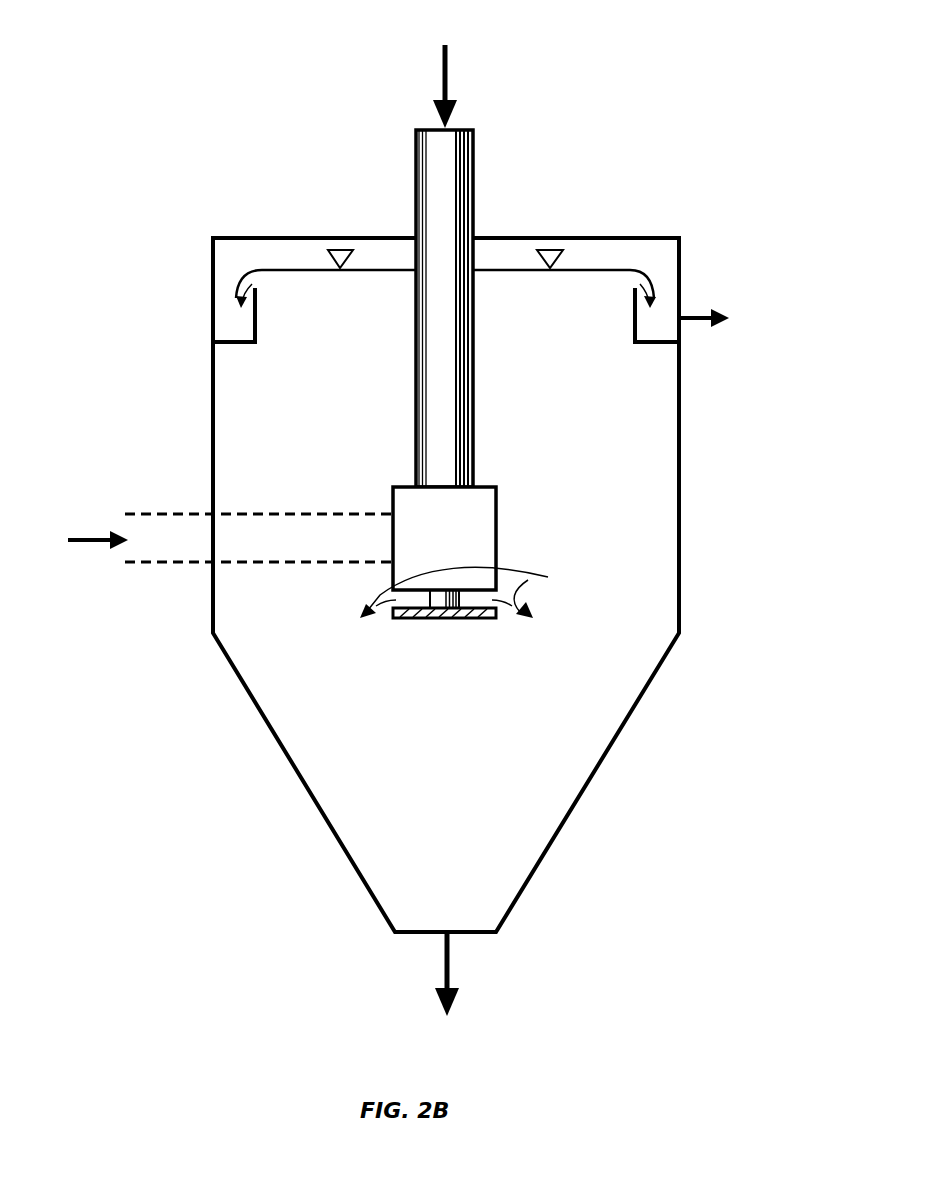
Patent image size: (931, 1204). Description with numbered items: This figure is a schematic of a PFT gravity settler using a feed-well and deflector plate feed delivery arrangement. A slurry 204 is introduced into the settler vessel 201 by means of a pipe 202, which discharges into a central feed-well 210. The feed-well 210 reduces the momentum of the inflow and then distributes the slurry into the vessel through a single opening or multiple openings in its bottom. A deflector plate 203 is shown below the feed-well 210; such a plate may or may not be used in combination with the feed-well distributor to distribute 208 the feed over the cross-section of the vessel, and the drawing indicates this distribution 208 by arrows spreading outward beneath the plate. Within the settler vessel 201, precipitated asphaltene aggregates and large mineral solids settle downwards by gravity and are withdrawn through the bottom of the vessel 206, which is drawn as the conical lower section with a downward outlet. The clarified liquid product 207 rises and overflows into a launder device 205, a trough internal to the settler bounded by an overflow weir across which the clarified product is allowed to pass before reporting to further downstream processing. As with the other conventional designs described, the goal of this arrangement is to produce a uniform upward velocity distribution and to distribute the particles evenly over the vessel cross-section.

The settler vessel 201 is at (681, 500).
The pipe 202 is at (476, 181).
The deflector plate 203 is at (442, 620).
The slurry 204 is at (448, 67).
The launder device 205 is at (213, 308).
The withdrawal through the bottom of the vessel 206 is at (449, 963).
The clarified liquid product 207 is at (652, 290).
The distribution of the slurry 208 is at (477, 592).
The central feed-well 210 is at (481, 487).